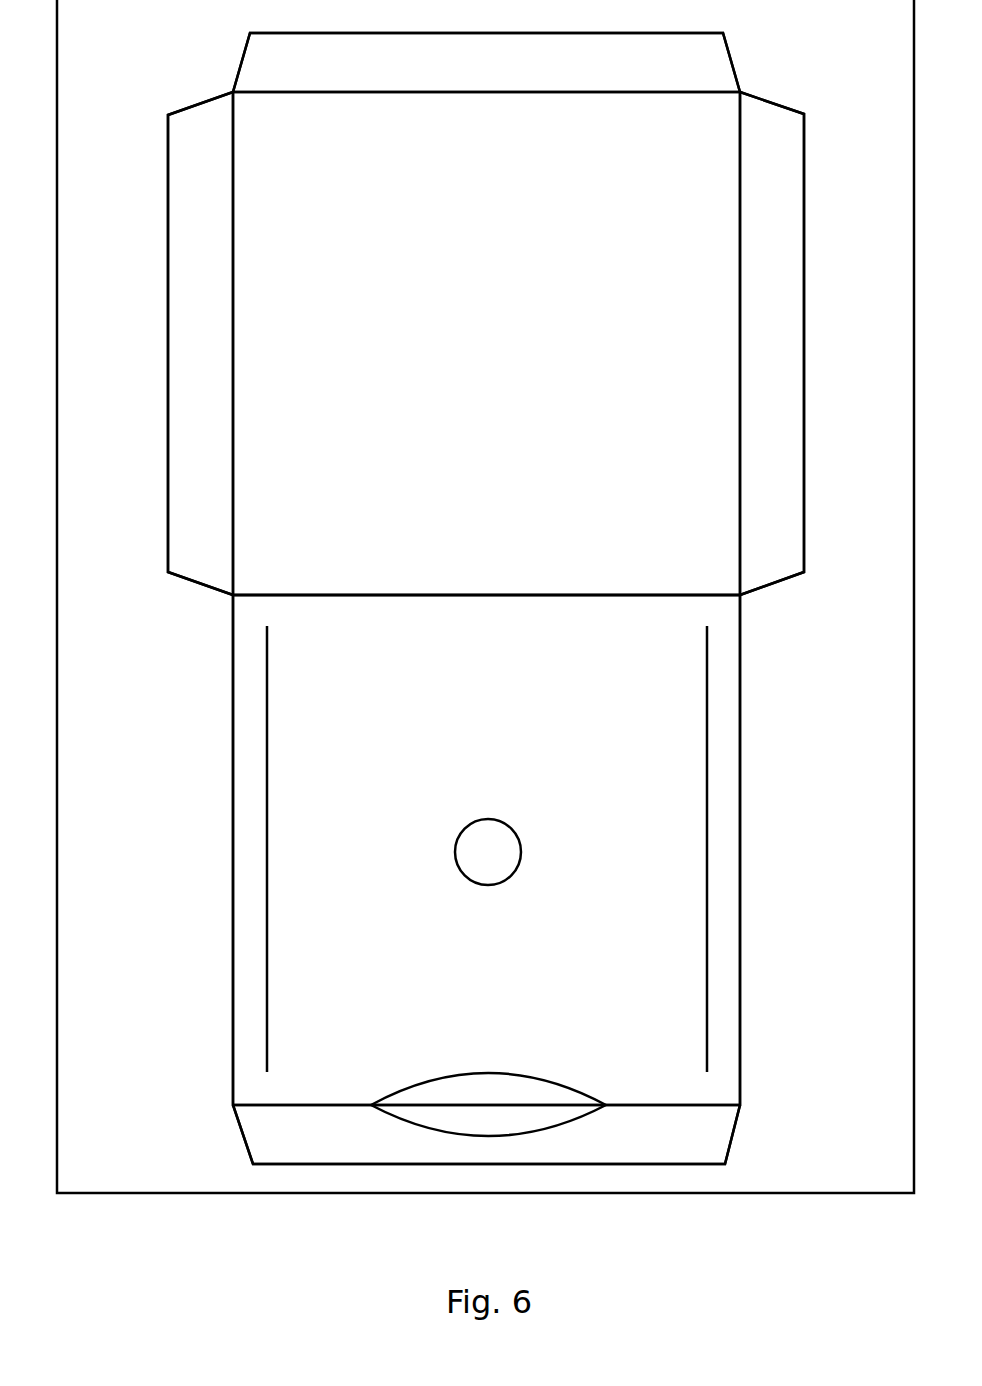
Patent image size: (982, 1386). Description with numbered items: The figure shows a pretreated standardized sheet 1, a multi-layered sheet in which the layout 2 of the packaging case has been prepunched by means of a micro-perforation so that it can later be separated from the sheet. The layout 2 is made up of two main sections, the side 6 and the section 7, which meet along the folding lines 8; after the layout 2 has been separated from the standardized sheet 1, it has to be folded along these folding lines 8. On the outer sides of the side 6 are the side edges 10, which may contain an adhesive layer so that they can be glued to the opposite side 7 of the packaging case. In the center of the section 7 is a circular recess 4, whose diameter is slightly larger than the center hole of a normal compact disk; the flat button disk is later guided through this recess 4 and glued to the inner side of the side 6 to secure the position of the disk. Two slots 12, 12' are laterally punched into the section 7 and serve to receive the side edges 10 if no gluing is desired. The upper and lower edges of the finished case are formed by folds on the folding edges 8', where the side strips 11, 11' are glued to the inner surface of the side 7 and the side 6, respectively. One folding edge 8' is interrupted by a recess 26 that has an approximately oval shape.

The standardized sheet 1 is at (855, 75).
The layout 2 is at (212, 84).
The circular recess 4 is at (500, 837).
The side 6 is at (661, 512).
The section 7 is at (661, 650).
The folding lines 8 is at (486, 343).
The folding edges 8' is at (486, 598).
The side edge 10 is at (196, 340).
The side strip 11 is at (486, 1068).
The side strip 11' is at (486, 105).
The slot 12 is at (329, 849).
The slot 12' is at (641, 849).
The recess 26 is at (505, 1090).